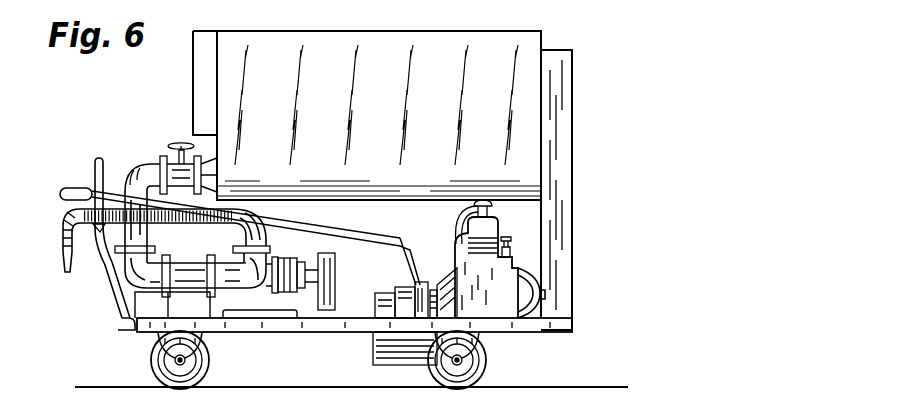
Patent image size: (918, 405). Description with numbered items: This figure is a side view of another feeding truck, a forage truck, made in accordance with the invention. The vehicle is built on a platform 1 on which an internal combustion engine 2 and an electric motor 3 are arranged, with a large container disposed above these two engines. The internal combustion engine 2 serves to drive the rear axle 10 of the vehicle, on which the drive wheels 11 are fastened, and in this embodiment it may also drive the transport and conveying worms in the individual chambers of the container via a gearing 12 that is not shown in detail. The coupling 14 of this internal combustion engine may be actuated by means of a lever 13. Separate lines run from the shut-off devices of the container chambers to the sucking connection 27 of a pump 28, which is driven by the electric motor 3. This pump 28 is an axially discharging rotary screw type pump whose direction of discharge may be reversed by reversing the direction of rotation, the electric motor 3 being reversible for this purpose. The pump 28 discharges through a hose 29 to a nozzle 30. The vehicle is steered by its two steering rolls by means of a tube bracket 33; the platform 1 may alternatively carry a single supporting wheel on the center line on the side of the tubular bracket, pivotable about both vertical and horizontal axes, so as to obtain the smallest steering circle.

The platform 1 is at (560, 322).
The internal combustion engine 2 is at (472, 268).
The electric motor 3 is at (262, 303).
The rear axle 10 is at (467, 362).
The drive wheels 11 is at (440, 367).
The gearing 12 is at (567, 215).
The lever 13 is at (72, 193).
The coupling 14 is at (410, 292).
The sucking connection 27 is at (118, 253).
The pump 28 is at (183, 275).
The hose 29 is at (233, 207).
The nozzle 30 is at (63, 262).
The tube bracket 33 is at (103, 163).